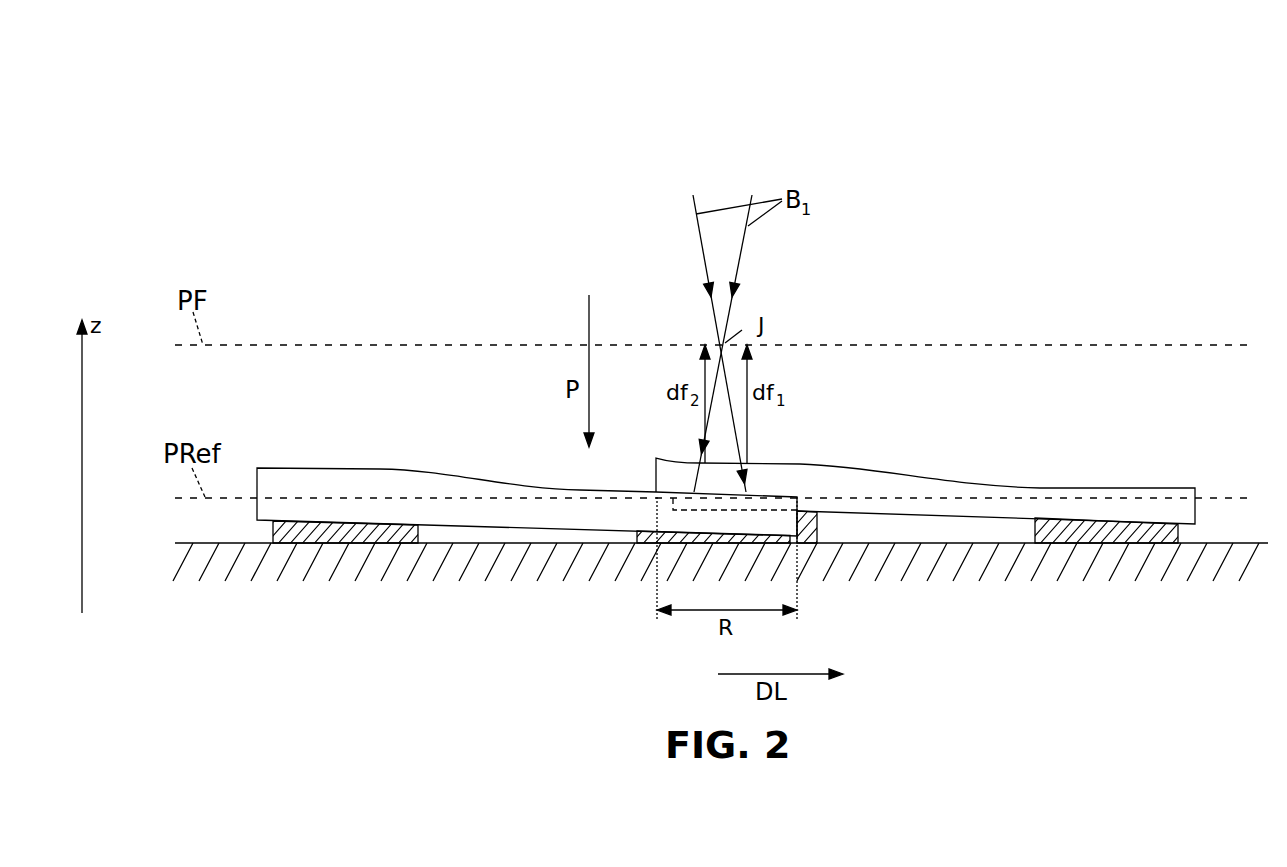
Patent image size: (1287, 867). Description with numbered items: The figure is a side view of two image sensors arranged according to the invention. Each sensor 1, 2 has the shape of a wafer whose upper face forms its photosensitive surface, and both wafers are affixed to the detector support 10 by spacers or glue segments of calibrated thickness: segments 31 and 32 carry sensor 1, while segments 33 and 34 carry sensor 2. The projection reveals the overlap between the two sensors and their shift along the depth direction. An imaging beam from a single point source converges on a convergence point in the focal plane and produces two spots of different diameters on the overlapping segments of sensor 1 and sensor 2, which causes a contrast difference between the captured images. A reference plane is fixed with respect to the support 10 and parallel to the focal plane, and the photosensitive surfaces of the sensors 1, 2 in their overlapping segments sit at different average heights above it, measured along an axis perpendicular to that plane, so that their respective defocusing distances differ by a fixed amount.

The sensor 1 is at (294, 468).
The sensor 2 is at (1168, 488).
The detector support 10 is at (202, 543).
The spacer or glue segment 31 is at (302, 532).
The spacer or glue segment 32 is at (645, 540).
The spacer or glue segment 33 is at (807, 540).
The spacer or glue segment 34 is at (1137, 533).